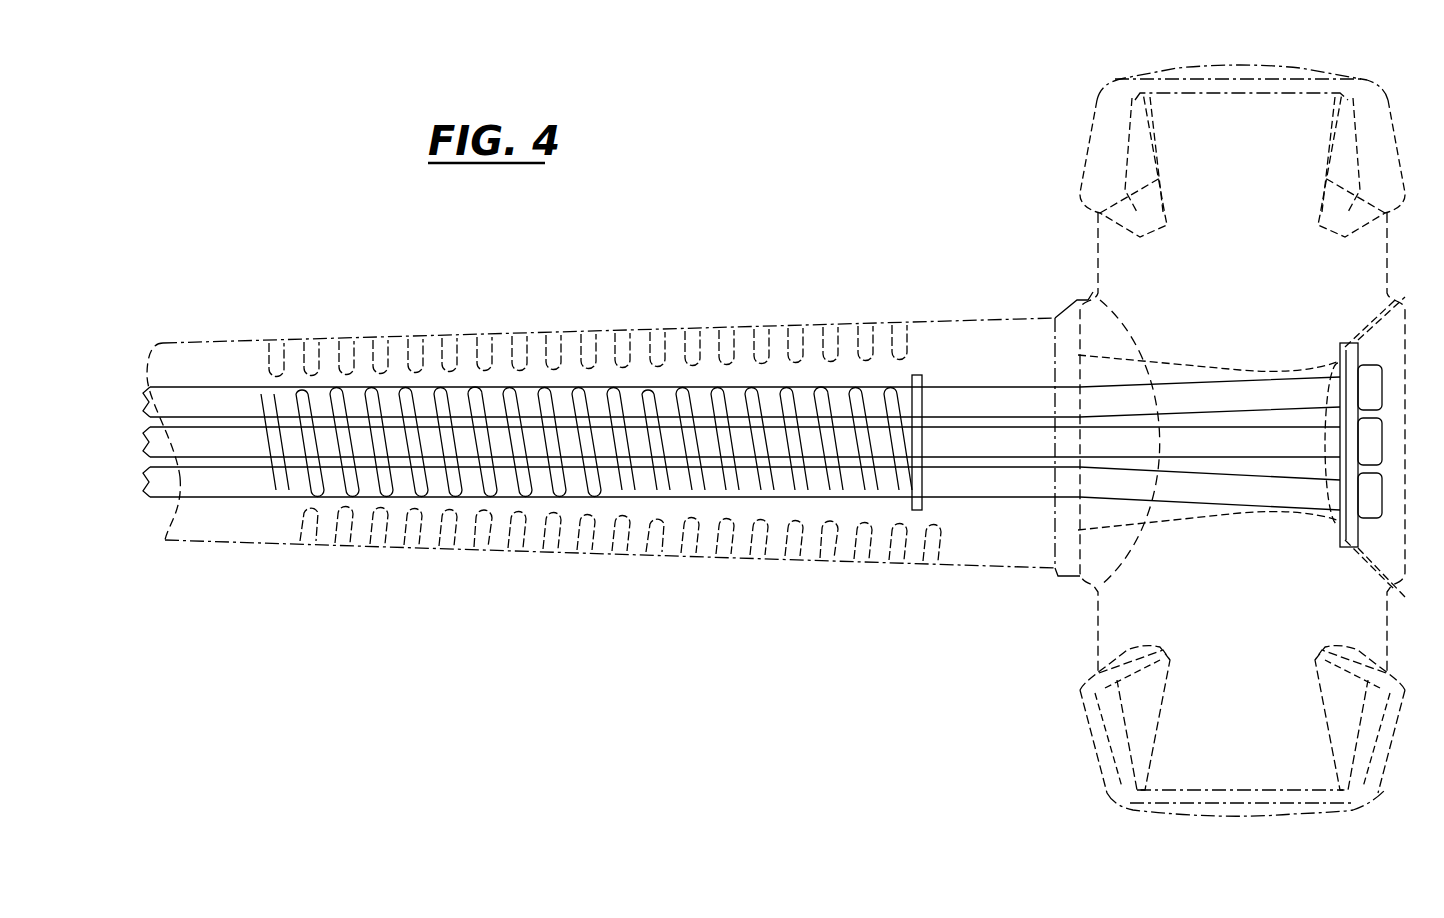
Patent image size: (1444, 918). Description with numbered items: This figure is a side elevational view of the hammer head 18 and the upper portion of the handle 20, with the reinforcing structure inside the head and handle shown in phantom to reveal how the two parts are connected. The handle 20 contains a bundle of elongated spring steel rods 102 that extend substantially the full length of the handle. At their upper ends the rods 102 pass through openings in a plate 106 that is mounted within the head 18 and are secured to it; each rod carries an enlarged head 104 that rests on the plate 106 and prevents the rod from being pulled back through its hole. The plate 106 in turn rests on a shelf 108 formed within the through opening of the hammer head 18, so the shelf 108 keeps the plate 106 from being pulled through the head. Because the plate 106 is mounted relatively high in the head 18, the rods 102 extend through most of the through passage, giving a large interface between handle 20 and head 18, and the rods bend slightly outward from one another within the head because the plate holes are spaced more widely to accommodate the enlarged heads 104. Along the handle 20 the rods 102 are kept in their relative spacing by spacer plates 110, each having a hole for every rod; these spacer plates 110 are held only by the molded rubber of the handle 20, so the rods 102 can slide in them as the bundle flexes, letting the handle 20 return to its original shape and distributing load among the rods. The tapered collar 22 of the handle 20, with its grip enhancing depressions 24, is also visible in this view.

The hammer head 18 is at (1303, 72).
The handle 20 is at (218, 345).
The tapered collar 22 is at (995, 540).
The grip enhancing depressions 24 is at (613, 550).
The elongated rods 102 is at (227, 482).
The enlarged head 104 is at (1367, 387).
The plate 106 is at (1350, 493).
The shelf 108 is at (1380, 333).
The spacer plates 110 is at (920, 398).